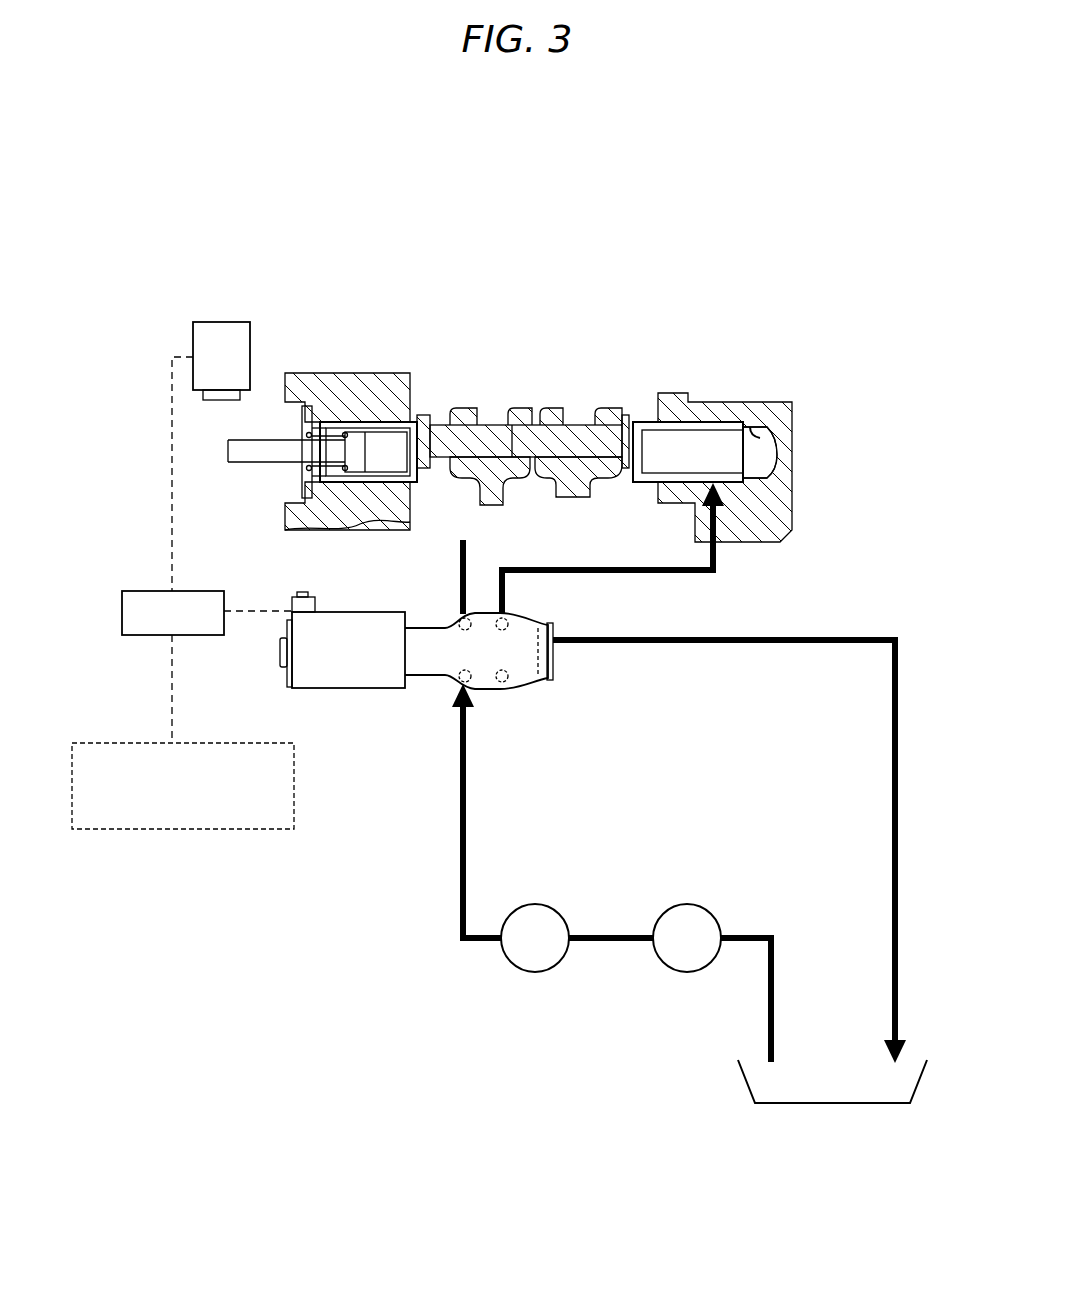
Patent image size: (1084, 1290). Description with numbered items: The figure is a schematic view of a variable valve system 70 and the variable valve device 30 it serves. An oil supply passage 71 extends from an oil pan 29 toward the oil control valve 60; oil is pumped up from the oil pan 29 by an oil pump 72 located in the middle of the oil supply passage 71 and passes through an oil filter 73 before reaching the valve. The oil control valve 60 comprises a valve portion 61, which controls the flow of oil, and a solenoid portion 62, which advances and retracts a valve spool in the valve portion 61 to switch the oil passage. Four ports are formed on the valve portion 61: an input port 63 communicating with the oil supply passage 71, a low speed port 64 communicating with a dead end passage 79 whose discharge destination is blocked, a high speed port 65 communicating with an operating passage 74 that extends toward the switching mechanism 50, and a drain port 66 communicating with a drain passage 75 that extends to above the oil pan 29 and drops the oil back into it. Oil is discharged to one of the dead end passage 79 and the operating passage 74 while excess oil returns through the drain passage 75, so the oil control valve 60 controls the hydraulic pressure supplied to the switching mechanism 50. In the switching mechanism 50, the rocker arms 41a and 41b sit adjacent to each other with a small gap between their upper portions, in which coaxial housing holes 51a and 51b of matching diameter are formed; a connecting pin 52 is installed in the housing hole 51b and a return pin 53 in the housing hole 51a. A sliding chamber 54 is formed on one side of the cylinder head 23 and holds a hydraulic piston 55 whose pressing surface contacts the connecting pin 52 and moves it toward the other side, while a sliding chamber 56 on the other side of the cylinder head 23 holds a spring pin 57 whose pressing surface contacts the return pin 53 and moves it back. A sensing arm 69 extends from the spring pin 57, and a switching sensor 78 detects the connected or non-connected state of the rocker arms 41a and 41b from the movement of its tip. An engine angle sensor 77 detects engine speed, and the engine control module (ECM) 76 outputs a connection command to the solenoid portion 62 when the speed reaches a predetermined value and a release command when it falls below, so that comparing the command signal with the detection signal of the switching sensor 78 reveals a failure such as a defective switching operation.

The cylinder head 23 is at (768, 400).
The oil pan 29 is at (829, 1104).
The variable valve device 30 is at (688, 323).
The rocker arm 41a is at (478, 422).
The rocker arm 41b is at (566, 422).
The switching mechanism 50 is at (618, 388).
The housing hole 51a is at (484, 432).
The housing hole 51b is at (578, 432).
The connecting pin 52 is at (572, 466).
The return pin 53 is at (500, 468).
The sliding chamber 54 is at (760, 433).
The hydraulic piston 55 is at (698, 422).
The sliding chamber 56 is at (387, 440).
The spring pin 57 is at (342, 397).
The oil control valve 60 is at (386, 706).
The valve portion 61 is at (430, 676).
The solenoid portion 62 is at (330, 690).
The input port 63 is at (488, 690).
The low speed port 64 is at (447, 625).
The high speed port 65 is at (522, 625).
The drain port 66 is at (538, 680).
The sensing arm 69 is at (264, 457).
The variable valve system 70 is at (793, 323).
The oil supply passage 71 is at (460, 840).
The oil pump 72 is at (687, 904).
The oil filter 73 is at (534, 904).
The operating passage 74 is at (638, 570).
The drain passage 75 is at (716, 640).
The engine control module (ECM) 76 is at (155, 590).
The engine angle sensor 77 is at (156, 742).
The switching sensor 78 is at (224, 322).
The dead end passage 79 is at (466, 540).